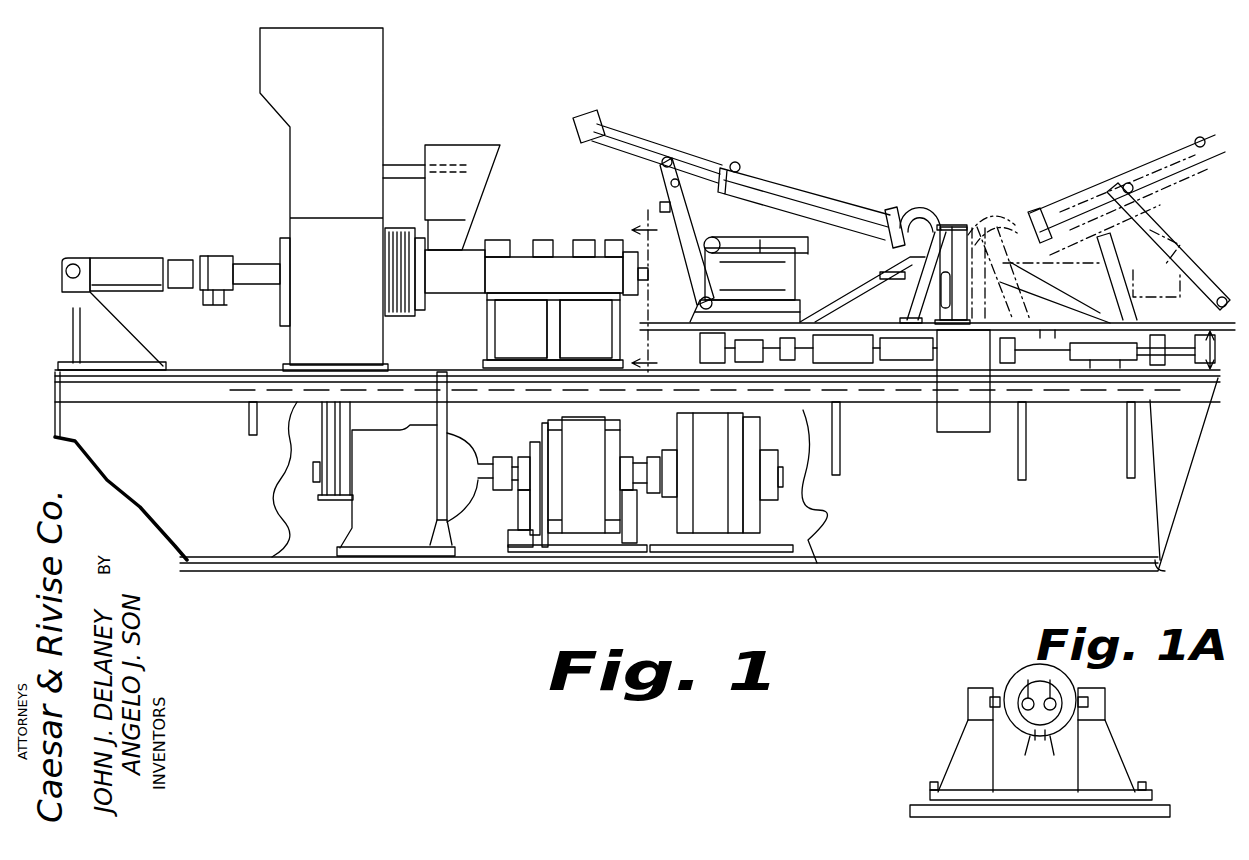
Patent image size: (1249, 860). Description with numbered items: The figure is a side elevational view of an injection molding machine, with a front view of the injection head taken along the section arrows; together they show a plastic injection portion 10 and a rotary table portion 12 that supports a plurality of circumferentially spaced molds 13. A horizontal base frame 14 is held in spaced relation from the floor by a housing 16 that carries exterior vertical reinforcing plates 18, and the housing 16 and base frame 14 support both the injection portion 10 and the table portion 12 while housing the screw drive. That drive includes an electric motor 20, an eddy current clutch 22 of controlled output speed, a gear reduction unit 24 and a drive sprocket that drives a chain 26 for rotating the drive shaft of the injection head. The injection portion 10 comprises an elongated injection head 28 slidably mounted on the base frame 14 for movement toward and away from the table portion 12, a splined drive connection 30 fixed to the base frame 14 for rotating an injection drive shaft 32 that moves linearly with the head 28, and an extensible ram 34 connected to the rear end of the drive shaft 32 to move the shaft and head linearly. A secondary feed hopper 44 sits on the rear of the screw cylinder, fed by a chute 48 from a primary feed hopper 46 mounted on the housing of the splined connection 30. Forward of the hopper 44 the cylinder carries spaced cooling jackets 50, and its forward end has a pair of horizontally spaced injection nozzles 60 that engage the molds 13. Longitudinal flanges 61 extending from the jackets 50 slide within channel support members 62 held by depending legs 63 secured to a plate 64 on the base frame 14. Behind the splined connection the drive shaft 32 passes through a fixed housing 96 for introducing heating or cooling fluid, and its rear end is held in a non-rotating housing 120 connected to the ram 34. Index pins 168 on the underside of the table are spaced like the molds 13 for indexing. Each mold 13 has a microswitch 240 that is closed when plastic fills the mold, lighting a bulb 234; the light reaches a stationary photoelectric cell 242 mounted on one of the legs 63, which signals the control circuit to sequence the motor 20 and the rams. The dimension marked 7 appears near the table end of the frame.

In FIG. 1, the vertical displacement dimension 7 is at (1218, 350).
In FIG. 1, the plastic injection portion 10 is at (213, 127).
In FIG. 1, the rotary table portion 12 is at (890, 158).
In FIG. 1, the molds 13 is at (772, 240).
In FIG. 1, the horizontal base frame 14 is at (238, 364).
In FIG. 1, the housing 16 is at (1175, 450).
In FIG. 1, the exterior vertical reinforcing plates 18 is at (250, 425).
In FIG. 1, the electric motor 20 is at (770, 447).
In FIG. 1, the eddy current clutch 22 is at (620, 440).
In FIG. 1, the gear reduction unit 24 is at (428, 424).
In FIG. 1, the chain 26 is at (321, 451).
In FIG. 1, the injection head 28 is at (632, 232).
In FIG. 1, the splined drive connection 30 is at (297, 235).
In FIG. 1, the injection drive shaft 32 is at (256, 263).
In FIG. 1, the extensible ram 34 is at (128, 257).
In FIG. 1, the secondary feed hopper 44 is at (500, 147).
In FIG. 1, the primary feed hopper 46 is at (385, 63).
In FIG. 1, the chute 48 is at (388, 165).
In FIG. 1, the cooling jackets 50 is at (543, 240).
In FIG. 1A, the cooling jackets 50 is at (1070, 685).
In FIG. 1, the injection nozzles 60 is at (646, 275).
In FIG. 1A, the injection nozzles 60 is at (1048, 672).
In FIG. 1A, the longitudinal flanges 61 is at (982, 695).
In FIG. 1, the channel support members 62 is at (520, 300).
In FIG. 1A, the channel support members 62 is at (968, 714).
In FIG. 1, the depending legs 63 is at (487, 338).
In FIG. 1A, the depending legs 63 is at (1125, 758).
In FIG. 1, the plate 64 is at (518, 364).
In FIG. 1A, the plate 64 is at (930, 797).
In FIG. 1, the fixed housing 96 is at (214, 255).
In FIG. 1, the non-rotating housing 120 is at (186, 259).
In FIG. 1, the index pins 168 is at (1182, 397).
In FIG. 1, the bulb 234 is at (862, 289).
In FIG. 1, the microswitch 240 is at (745, 312).
In FIG. 1, the photoelectric cell 242 is at (696, 352).